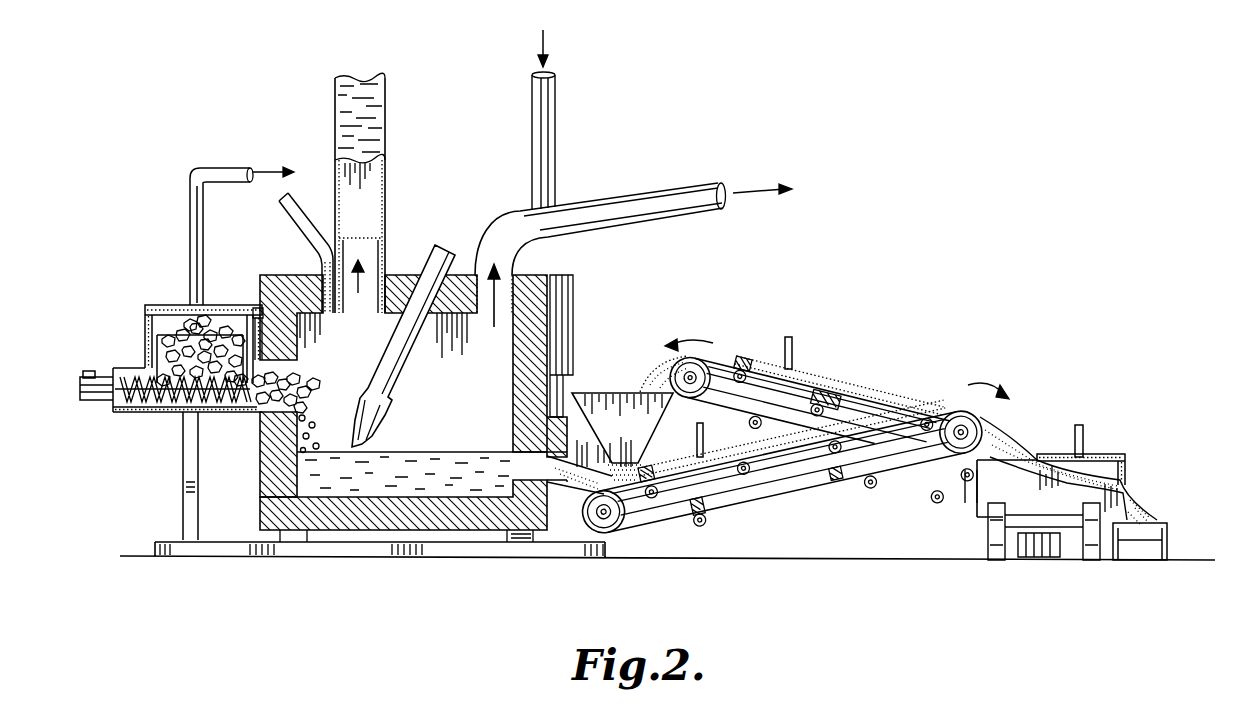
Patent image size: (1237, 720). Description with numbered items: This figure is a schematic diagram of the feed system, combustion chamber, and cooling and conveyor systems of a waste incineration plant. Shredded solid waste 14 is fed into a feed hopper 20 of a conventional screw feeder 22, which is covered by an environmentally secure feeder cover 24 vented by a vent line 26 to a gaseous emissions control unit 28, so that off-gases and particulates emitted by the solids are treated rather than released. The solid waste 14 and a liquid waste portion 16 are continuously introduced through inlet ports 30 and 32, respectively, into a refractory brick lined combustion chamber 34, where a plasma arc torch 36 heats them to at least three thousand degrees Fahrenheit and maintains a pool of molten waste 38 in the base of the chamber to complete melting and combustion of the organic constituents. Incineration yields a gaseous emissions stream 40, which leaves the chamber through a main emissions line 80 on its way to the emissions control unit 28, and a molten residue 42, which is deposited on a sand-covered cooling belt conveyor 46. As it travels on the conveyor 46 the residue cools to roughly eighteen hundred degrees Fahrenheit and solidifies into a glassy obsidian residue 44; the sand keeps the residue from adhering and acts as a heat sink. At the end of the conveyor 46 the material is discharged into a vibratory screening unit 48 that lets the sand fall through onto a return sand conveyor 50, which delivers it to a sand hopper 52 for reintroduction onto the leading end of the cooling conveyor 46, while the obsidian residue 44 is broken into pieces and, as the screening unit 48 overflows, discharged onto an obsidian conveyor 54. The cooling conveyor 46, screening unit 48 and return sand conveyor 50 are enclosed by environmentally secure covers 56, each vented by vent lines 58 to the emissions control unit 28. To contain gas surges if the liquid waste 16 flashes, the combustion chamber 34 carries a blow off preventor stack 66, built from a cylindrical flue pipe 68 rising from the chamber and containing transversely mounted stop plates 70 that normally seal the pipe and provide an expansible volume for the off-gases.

The shredded solid waste 14 is at (178, 330).
The liquid waste portion 16 is at (293, 206).
The feed hopper 20 is at (143, 337).
The screw feeder 22 is at (132, 414).
The feeder cover 24 is at (226, 306).
The vent line 26 is at (190, 206).
The gaseous emissions control unit 28 is at (748, 190).
The inlet port 30 is at (251, 413).
The inlet port 32 is at (292, 277).
The combustion chamber 34 is at (350, 517).
The plasma arc torch 36 is at (407, 378).
The pool of molten waste 38 is at (470, 478).
The gaseous emissions stream 40 is at (587, 215).
The molten residue 42 is at (572, 494).
The glassy obsidian residue 44 is at (1137, 490).
The cooling belt conveyor 46 is at (763, 487).
The vibratory screening unit 48 is at (980, 523).
The return sand conveyor 50 is at (830, 397).
The sand hopper 52 is at (607, 393).
The obsidian conveyor 54 is at (1150, 533).
The environmentally secure covers 56 is at (1127, 457).
The vent lines 58 is at (1085, 435).
The blow off preventor stack 66 is at (362, 187).
The cylindrical flue pipe 68 is at (393, 117).
The stop plates 70 is at (363, 235).
The main emissions line 80 is at (643, 193).